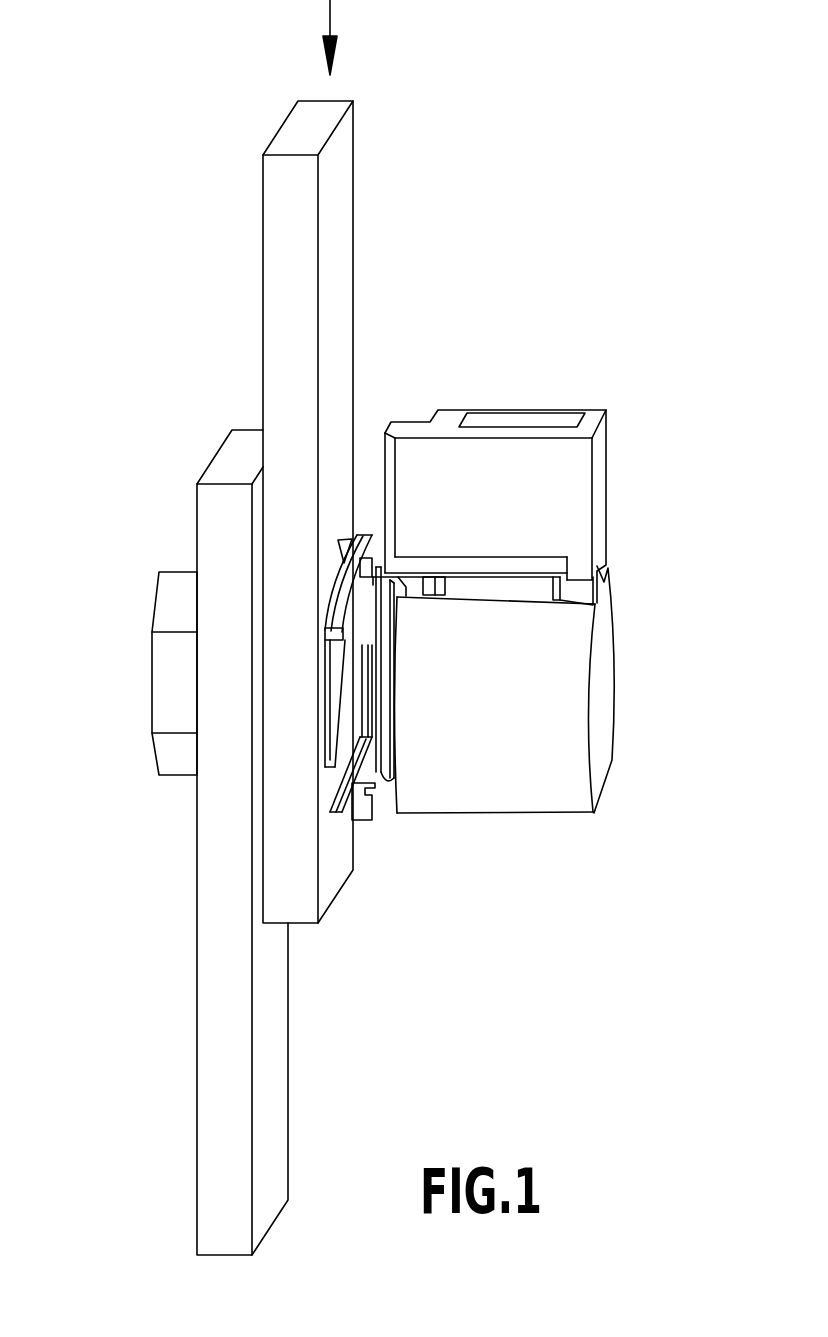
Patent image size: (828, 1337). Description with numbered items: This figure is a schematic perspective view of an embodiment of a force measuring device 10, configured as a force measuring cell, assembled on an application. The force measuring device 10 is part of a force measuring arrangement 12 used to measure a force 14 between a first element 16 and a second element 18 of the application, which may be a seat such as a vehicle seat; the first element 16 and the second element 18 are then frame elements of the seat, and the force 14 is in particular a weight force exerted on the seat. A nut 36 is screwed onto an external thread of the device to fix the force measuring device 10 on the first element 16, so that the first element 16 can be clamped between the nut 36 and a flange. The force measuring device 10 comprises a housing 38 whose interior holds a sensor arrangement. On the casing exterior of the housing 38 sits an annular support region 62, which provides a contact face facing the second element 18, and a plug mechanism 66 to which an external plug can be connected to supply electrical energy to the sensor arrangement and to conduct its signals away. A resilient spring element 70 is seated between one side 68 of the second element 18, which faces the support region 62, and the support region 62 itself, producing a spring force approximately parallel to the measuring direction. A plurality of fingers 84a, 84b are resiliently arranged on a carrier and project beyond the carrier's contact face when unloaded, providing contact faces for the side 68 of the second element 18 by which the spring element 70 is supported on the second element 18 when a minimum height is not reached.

The force measuring device 10 is at (600, 356).
The force measuring arrangement 12 is at (433, 190).
The force 14 is at (330, 3).
The first element 16 is at (225, 978).
The second element 18 is at (343, 845).
The nut 36 is at (170, 759).
The housing 38 is at (512, 777).
The support region 62 is at (385, 768).
The plug mechanism 66 is at (577, 492).
The side of the second element 68 is at (337, 872).
The spring element 70 is at (371, 535).
The finger 84a is at (337, 802).
The finger 84b is at (343, 593).